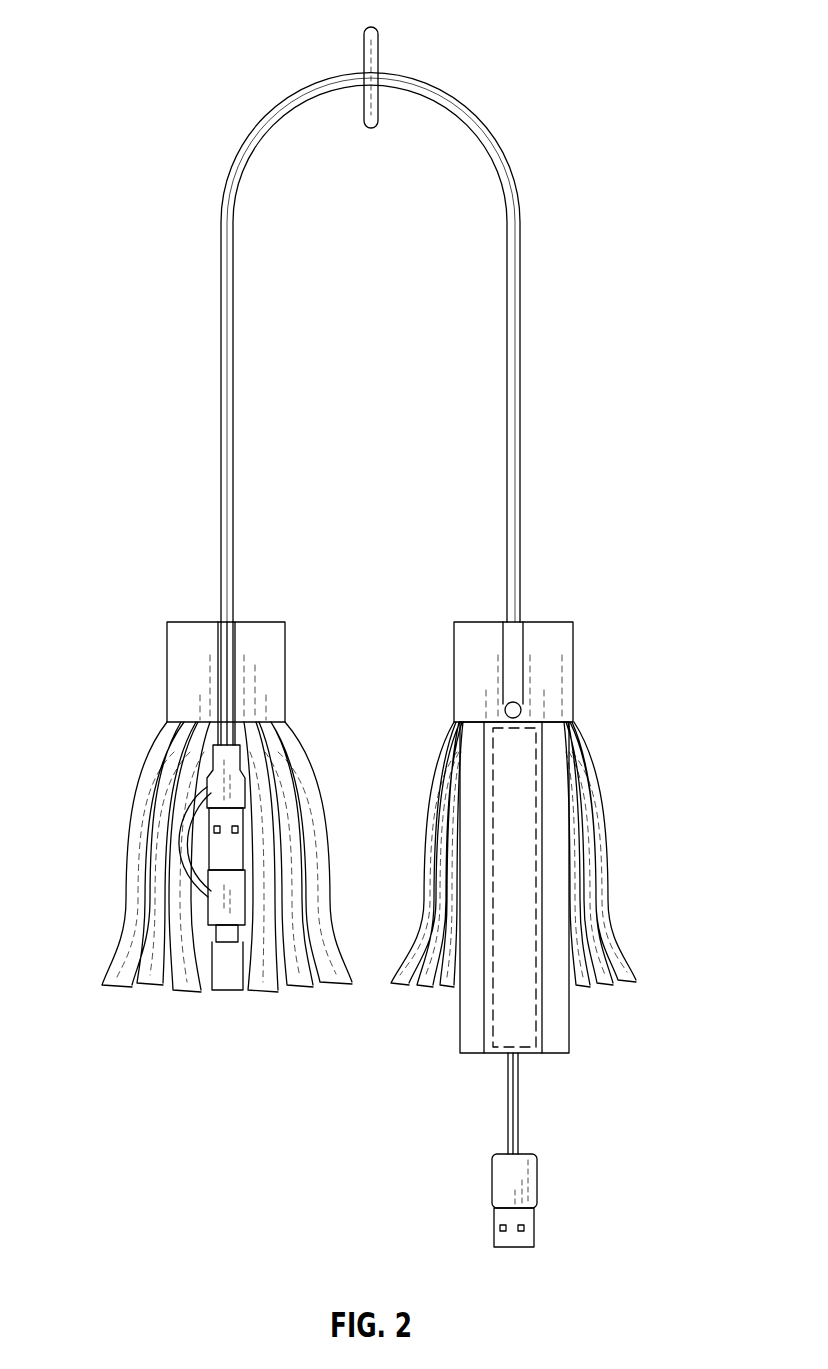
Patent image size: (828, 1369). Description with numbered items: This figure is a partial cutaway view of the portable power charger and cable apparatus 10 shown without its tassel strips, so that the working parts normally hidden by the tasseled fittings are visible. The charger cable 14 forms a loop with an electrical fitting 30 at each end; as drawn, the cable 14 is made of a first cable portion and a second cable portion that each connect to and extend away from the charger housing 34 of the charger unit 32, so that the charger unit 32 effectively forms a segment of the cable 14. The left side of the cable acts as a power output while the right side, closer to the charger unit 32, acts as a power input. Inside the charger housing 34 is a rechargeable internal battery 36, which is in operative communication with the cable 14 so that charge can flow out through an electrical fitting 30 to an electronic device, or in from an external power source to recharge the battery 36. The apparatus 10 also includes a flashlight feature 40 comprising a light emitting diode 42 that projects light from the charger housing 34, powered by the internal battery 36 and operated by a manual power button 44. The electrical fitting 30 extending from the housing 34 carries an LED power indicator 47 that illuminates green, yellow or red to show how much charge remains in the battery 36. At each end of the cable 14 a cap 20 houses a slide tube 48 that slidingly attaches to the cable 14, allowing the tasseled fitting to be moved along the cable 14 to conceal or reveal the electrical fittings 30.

The portable power charger and cable apparatus 10 is at (279, 34).
The charger cable 14 is at (495, 138).
The cap 20 is at (178, 648).
The electrical fitting 30 is at (170, 841).
The charger unit 32 is at (586, 915).
The charger housing 34 is at (571, 998).
The rechargeable internal battery 36 is at (522, 838).
The flashlight feature 40 is at (497, 1055).
The light emitting diode 42 is at (531, 1055).
The manual power button 44 is at (507, 716).
The LED power indicator 47 is at (491, 1185).
The slide tube 48 is at (515, 685).